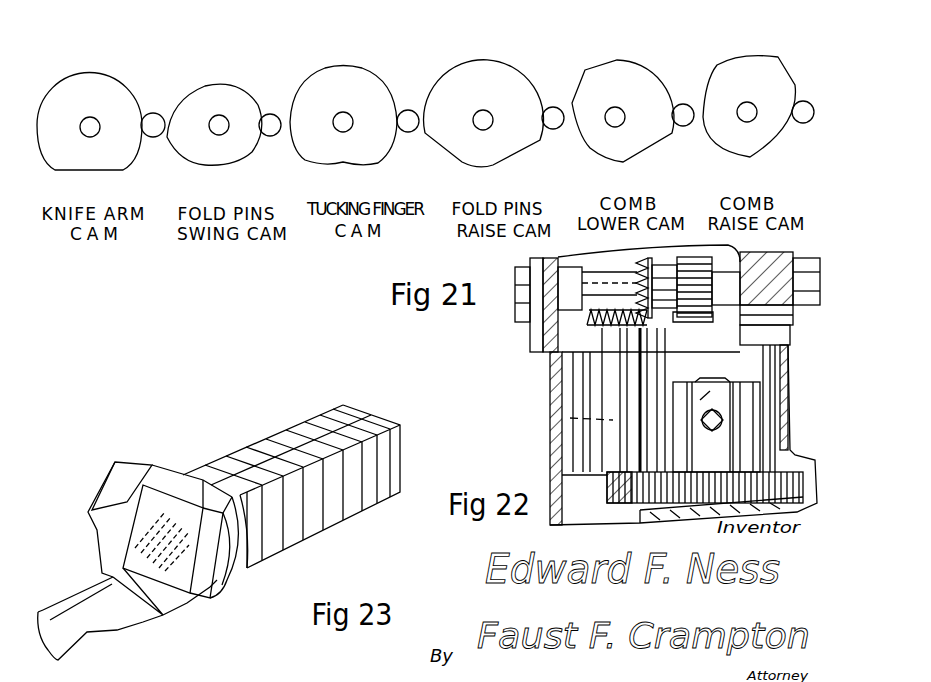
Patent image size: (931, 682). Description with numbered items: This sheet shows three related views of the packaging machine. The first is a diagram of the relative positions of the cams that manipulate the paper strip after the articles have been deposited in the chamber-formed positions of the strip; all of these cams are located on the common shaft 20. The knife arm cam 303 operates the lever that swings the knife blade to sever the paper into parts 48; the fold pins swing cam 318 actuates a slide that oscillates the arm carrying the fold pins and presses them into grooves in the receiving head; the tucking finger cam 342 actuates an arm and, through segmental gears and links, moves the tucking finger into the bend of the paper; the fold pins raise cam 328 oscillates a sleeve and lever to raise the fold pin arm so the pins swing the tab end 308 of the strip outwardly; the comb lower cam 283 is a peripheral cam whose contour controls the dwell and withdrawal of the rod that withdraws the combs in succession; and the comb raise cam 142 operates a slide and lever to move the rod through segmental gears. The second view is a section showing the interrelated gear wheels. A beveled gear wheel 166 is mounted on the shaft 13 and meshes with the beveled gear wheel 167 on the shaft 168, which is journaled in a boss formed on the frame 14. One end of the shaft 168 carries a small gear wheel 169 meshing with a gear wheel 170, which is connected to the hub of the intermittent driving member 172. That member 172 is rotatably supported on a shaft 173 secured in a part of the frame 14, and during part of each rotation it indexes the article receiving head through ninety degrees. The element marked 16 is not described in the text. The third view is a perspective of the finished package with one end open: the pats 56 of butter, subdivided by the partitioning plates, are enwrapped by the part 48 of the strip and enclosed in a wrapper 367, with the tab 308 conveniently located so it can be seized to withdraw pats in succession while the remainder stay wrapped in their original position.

In FIG. 21, the cam 303 is at (98, 93).
In FIG. 21, the shaft 20 is at (91, 127).
In FIG. 21, the cam 318 is at (220, 97).
In FIG. 21, the cam 342 is at (358, 87).
In FIG. 21, the cam 328 is at (510, 83).
In FIG. 21, the peripheral cam 283 is at (632, 87).
In FIG. 21, the cam 142 is at (760, 73).
In FIG. 22, the shaft 13 is at (587, 287).
In FIG. 22, the frame 14 is at (550, 378).
In FIG. 22, the ribbed collar 16 is at (697, 285).
In FIG. 22, the beveled gear wheel 166 is at (675, 317).
In FIG. 22, the beveled gear wheel 167 is at (647, 323).
In FIG. 22, the shaft 168 is at (562, 416).
In FIG. 22, the small gear wheel 169 is at (607, 487).
In FIG. 22, the gear wheel 170 is at (687, 482).
In FIG. 22, the intermittent driving member 172 is at (637, 517).
In FIG. 22, the shaft 173 is at (722, 387).
In FIG. 23, the wrapper 367 is at (125, 475).
In FIG. 23, the pats 56 is at (170, 512).
In FIG. 23, the part of the strip 48 is at (227, 577).
In FIG. 23, the tab end 308 is at (70, 635).